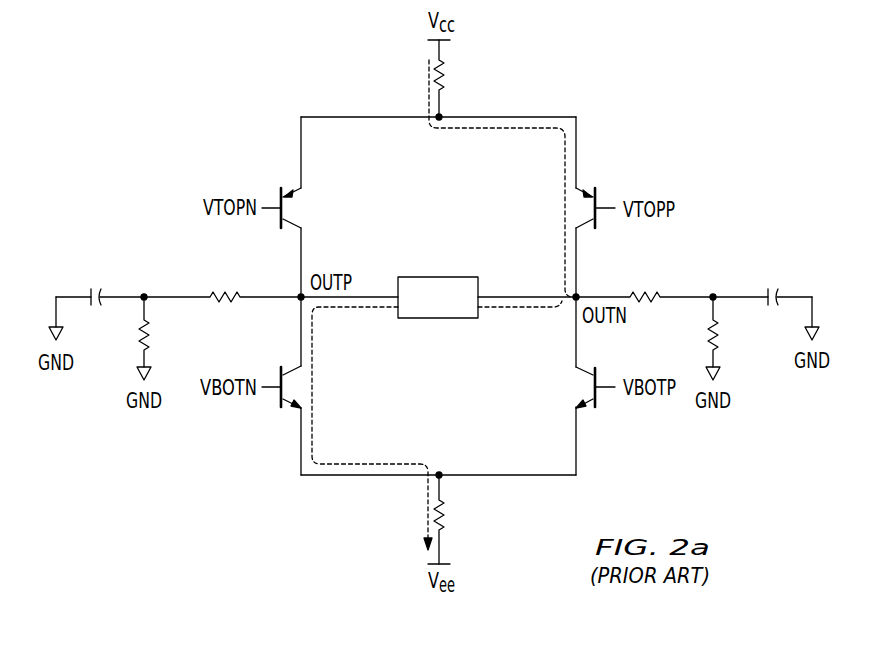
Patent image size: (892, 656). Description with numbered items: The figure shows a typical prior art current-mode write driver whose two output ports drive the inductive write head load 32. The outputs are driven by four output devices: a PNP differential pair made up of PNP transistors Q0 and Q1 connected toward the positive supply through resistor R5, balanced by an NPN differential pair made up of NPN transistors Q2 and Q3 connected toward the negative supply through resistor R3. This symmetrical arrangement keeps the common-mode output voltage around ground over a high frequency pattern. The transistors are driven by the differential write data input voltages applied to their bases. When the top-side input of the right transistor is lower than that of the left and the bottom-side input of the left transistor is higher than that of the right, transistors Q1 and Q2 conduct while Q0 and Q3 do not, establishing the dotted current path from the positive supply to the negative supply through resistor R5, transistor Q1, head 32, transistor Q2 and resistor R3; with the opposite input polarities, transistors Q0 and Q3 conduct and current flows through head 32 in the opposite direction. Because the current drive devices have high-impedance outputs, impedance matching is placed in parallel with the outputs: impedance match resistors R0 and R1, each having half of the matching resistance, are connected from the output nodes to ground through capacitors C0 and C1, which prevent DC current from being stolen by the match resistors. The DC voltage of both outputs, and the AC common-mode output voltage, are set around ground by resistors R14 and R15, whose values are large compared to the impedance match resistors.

The inductive write head load 32 is at (445, 318).
The resistor R5 is at (452, 78).
The resistor R3 is at (450, 519).
The resistor R14 is at (161, 338).
The resistor R15 is at (696, 338).
The impedance match resistor R0 is at (222, 284).
The impedance match resistor R1 is at (644, 285).
The capacitor C0 is at (100, 282).
The capacitor C1 is at (762, 282).
The PNP transistor Q0 is at (292, 208).
The PNP transistor Q1 is at (595, 195).
The NPN transistor Q2 is at (281, 374).
The NPN transistor Q3 is at (585, 387).